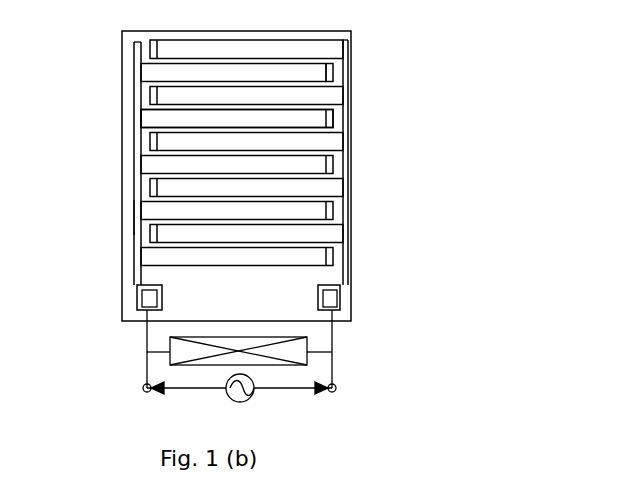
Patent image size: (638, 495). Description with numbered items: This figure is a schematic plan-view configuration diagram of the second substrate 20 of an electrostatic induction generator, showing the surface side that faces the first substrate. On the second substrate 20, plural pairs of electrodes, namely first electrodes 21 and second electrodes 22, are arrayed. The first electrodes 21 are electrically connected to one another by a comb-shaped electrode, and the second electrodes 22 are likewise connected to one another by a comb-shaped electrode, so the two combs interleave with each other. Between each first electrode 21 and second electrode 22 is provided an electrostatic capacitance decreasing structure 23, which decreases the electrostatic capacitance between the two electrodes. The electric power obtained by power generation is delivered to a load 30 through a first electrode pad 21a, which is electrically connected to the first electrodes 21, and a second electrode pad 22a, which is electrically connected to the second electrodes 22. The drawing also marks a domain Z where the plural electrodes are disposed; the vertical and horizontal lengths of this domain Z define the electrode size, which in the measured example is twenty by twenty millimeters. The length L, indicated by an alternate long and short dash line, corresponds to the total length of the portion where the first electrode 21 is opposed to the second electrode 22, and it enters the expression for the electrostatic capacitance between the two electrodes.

The second substrate 20 is at (348, 143).
The first electrode 21 is at (160, 73).
The second electrode 22 is at (315, 50).
The electrostatic capacitance decreasing structure 23 is at (168, 132).
The first electrode pad 21a is at (143, 300).
The second electrode pad 22a is at (333, 297).
The load 30 is at (300, 345).
The total length of opposed domain L is at (327, 73).
The domain where the plural electrodes are disposed Z is at (133, 218).